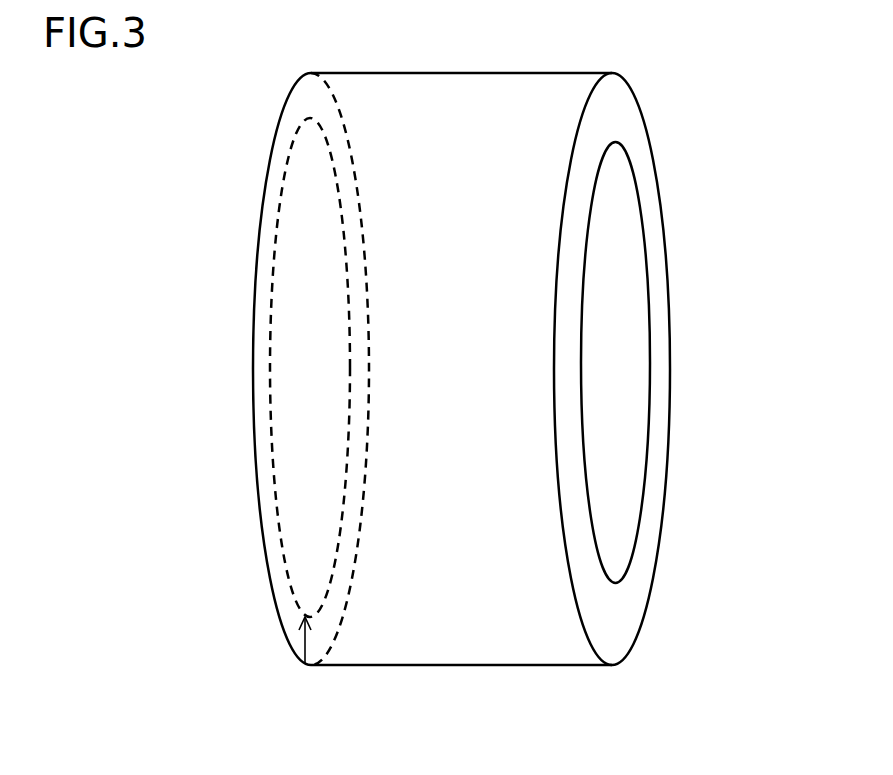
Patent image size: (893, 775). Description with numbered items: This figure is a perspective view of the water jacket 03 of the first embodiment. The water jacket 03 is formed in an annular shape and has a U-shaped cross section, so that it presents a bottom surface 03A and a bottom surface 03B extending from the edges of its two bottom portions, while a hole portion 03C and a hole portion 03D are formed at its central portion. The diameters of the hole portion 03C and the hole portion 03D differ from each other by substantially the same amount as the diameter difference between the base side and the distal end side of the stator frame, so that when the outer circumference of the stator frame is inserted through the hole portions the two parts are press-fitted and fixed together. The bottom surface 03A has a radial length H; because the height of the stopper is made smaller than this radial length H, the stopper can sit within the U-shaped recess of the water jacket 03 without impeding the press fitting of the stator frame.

The water jacket 03 is at (486, 692).
The bottom surface 03A is at (303, 97).
The bottom surface 03B is at (608, 105).
The hole portion 03C is at (330, 285).
The hole portion 03D is at (618, 282).
The radial length of the bottom surface H is at (315, 640).